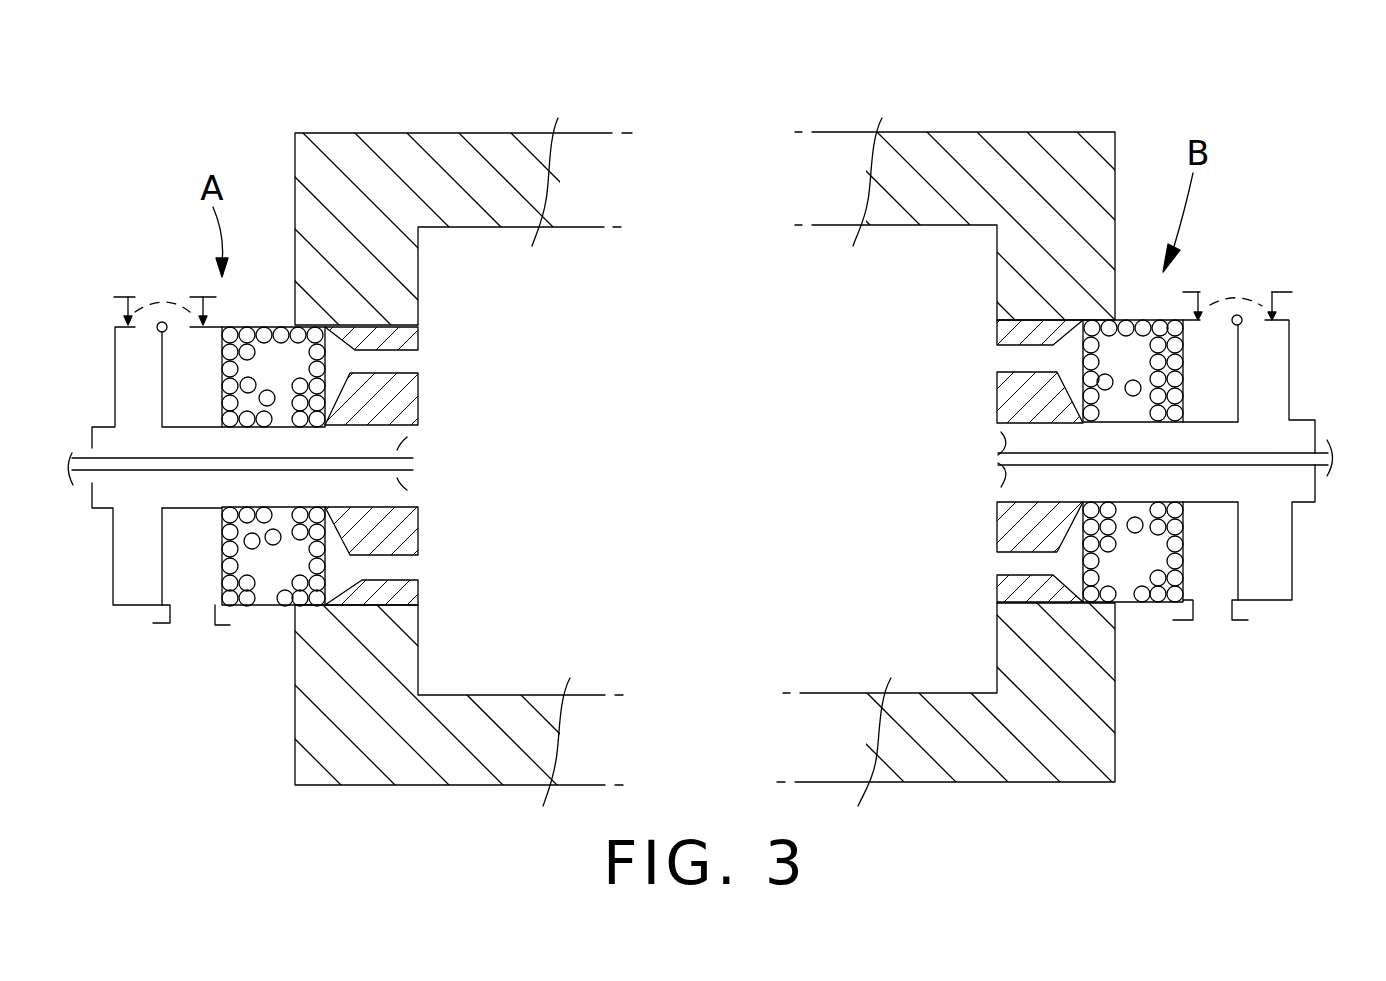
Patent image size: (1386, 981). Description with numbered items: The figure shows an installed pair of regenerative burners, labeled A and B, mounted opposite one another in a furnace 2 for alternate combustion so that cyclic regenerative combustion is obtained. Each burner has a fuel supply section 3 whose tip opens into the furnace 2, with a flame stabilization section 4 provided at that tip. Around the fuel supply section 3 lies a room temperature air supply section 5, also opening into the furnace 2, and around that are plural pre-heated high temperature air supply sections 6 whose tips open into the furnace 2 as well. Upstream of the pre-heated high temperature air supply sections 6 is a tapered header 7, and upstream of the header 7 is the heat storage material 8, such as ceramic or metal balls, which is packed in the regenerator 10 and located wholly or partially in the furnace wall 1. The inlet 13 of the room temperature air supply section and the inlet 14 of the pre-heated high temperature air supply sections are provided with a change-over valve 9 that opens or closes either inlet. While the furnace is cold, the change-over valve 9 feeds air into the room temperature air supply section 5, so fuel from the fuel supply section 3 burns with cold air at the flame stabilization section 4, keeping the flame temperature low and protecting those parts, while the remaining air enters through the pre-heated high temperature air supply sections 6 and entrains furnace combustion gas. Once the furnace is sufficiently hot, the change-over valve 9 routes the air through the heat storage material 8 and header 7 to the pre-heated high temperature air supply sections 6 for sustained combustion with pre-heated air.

The furnace wall 1 is at (450, 155).
The furnace 2 is at (652, 446).
The fuel supply section 3 is at (150, 473).
The flame stabilization section 4 is at (407, 437).
The room temperature air supply section 5 is at (343, 495).
The pre-heated high temperature air supply sections 6 is at (392, 362).
The header 7 is at (1075, 578).
The heat storage material 8 is at (273, 545).
The change-over valve 9 is at (155, 320).
The regenerator 10 is at (270, 360).
The inlet of the room temperature air supply section 13 is at (115, 328).
The inlet of the pre-heated high temperature air supply sections 14 is at (192, 337).